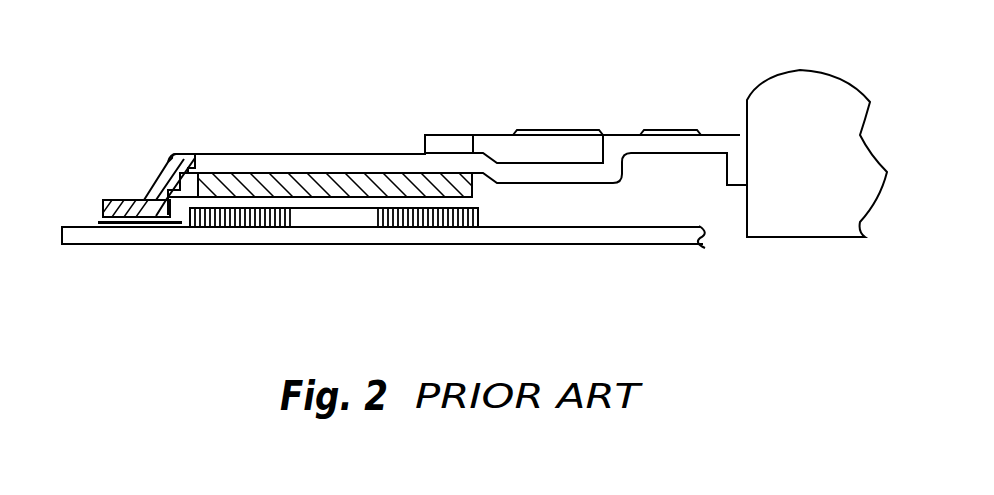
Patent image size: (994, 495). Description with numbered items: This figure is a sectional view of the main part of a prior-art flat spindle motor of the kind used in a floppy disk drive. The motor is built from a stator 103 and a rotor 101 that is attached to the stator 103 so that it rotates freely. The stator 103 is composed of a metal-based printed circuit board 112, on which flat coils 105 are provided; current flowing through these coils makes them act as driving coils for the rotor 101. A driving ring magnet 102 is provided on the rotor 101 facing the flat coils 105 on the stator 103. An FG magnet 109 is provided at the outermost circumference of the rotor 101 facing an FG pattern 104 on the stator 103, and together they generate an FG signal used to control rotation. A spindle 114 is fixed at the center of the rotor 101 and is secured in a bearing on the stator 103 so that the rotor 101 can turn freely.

The rotor 101 is at (374, 141).
The driving ring magnet 102 is at (250, 177).
The stator 103 is at (383, 276).
The FG pattern 104 is at (139, 226).
The flat coil 105 is at (253, 215).
The FG magnet 109 is at (158, 198).
The metal-based printed circuit board 112 is at (518, 235).
The spindle 114 is at (808, 82).